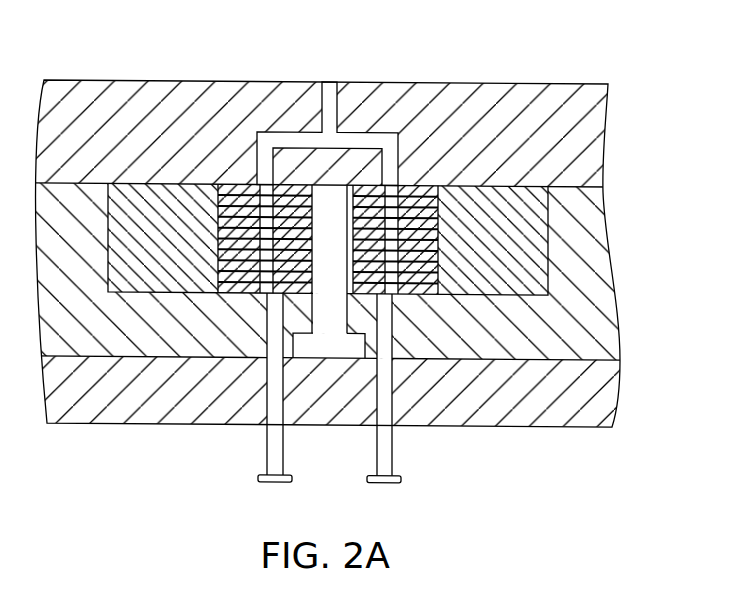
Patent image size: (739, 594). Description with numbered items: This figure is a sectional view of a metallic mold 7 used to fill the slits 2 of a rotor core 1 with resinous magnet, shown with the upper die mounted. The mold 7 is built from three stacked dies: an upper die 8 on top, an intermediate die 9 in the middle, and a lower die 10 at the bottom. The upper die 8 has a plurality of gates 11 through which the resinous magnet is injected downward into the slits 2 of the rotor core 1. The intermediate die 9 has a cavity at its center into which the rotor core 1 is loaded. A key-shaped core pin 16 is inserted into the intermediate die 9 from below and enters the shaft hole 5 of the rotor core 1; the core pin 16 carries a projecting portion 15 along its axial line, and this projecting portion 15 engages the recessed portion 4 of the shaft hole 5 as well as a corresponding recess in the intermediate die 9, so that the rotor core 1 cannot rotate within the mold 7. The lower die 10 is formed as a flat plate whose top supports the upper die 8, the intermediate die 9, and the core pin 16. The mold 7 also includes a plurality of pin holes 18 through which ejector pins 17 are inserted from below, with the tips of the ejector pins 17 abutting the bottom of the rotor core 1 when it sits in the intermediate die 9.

The rotor core 1 is at (436, 185).
The slits 2 is at (258, 196).
The recessed portion 4 is at (345, 203).
The shaft hole 5 is at (314, 198).
The metallic mold 7 is at (557, 66).
The upper die 8 is at (593, 142).
The intermediate die 9 is at (628, 270).
The lower die 10 is at (600, 391).
The gates 11 is at (262, 193).
The projecting portion 15 is at (358, 333).
The core pin 16 is at (316, 343).
The ejector pins 17 is at (267, 445).
The pin holes 18 is at (268, 390).